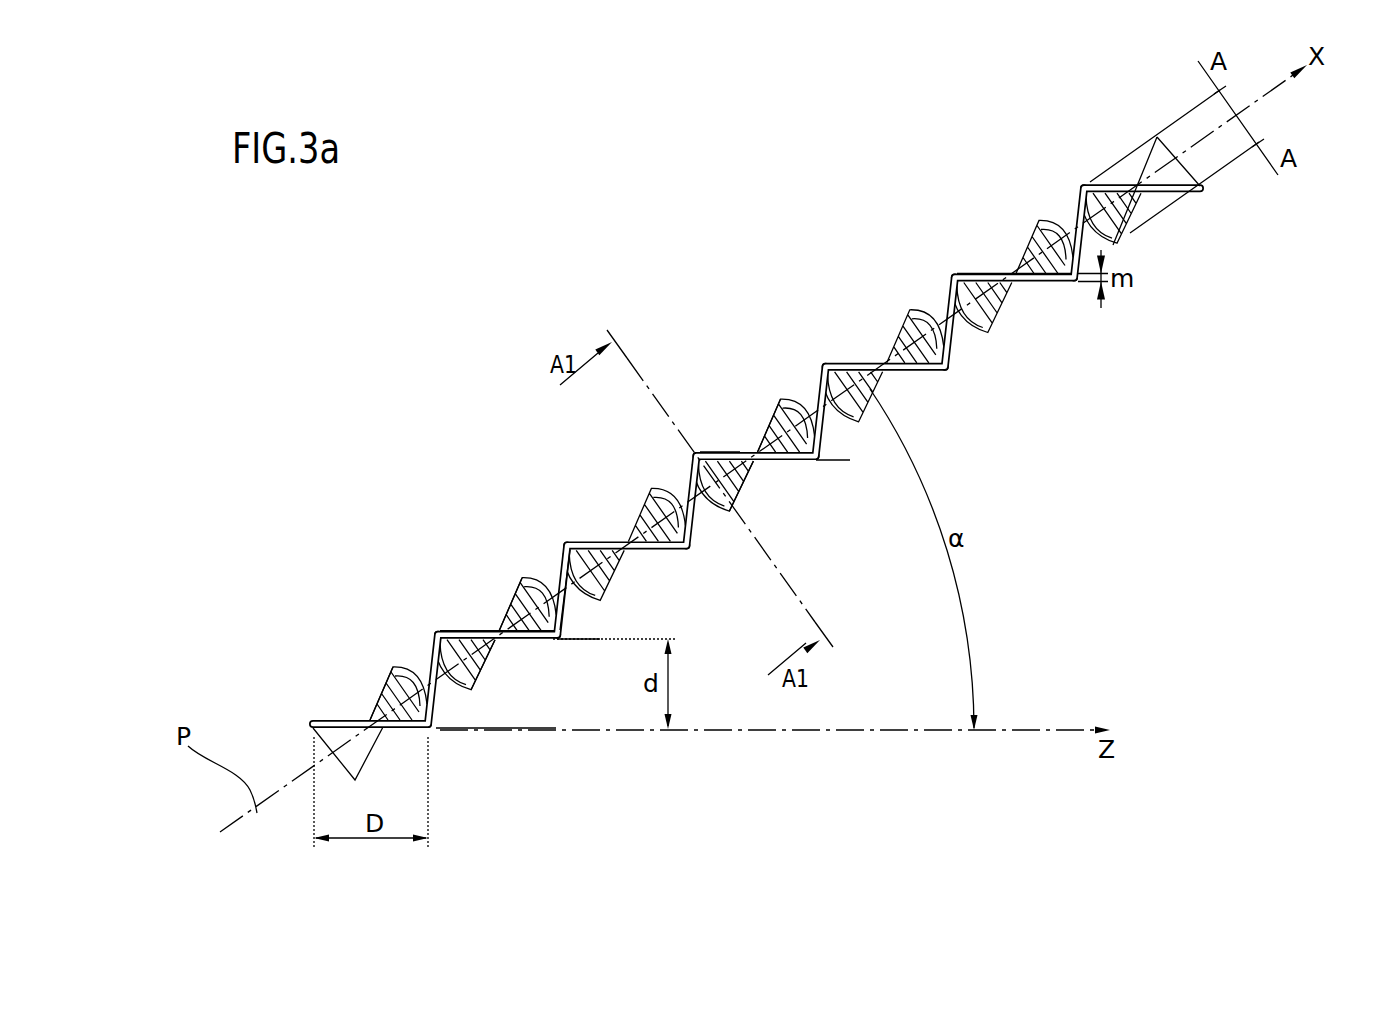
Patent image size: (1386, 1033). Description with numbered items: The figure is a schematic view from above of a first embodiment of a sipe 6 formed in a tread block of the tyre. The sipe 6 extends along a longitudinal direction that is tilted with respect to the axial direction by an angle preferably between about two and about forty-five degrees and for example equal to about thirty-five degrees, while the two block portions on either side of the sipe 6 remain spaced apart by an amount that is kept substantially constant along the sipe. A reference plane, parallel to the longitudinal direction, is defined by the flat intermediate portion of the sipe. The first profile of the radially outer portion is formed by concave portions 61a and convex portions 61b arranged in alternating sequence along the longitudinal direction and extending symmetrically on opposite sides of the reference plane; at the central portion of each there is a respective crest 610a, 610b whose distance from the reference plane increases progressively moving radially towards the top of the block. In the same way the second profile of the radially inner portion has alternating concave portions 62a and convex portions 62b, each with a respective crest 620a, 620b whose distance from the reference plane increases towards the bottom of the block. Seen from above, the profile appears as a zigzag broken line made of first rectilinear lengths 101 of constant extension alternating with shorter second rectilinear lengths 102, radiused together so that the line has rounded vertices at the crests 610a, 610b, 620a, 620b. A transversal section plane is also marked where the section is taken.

The sipe 6 is at (638, 195).
The first rectilinear length 101 is at (326, 716).
The second rectilinear length 102 is at (446, 712).
The crest 610a is at (460, 640).
The crest 610b is at (570, 610).
The crest 620a is at (436, 675).
The crest 620b is at (470, 692).
The concave portion 61a is at (394, 640).
The convex portion 61b is at (565, 653).
The concave portion 62a is at (511, 551).
The convex portion 62b is at (509, 699).